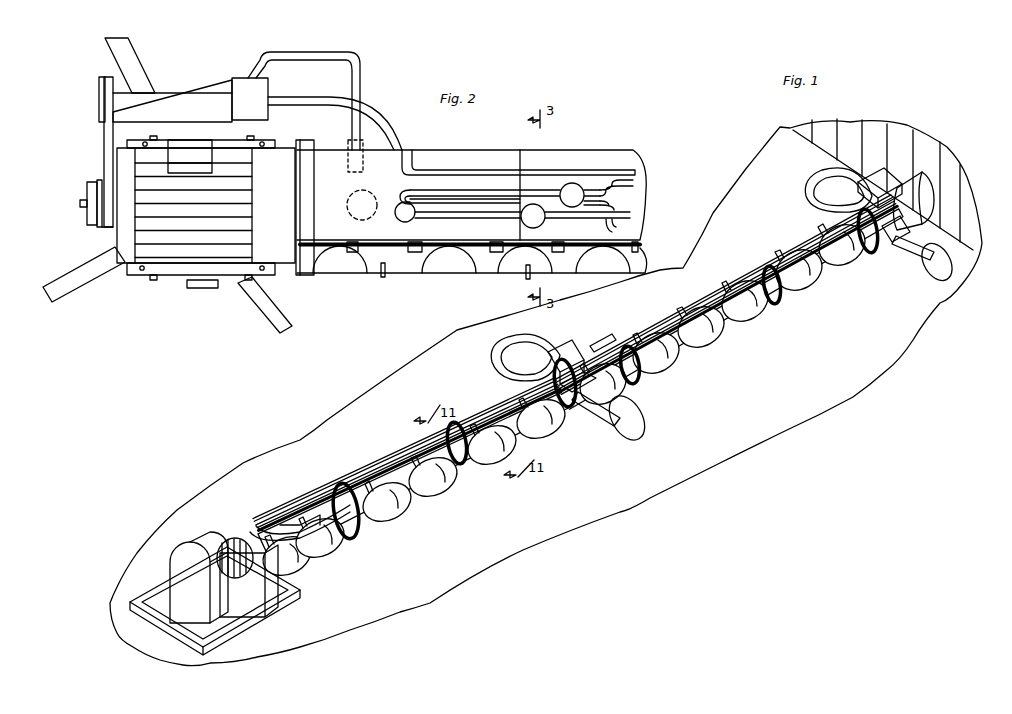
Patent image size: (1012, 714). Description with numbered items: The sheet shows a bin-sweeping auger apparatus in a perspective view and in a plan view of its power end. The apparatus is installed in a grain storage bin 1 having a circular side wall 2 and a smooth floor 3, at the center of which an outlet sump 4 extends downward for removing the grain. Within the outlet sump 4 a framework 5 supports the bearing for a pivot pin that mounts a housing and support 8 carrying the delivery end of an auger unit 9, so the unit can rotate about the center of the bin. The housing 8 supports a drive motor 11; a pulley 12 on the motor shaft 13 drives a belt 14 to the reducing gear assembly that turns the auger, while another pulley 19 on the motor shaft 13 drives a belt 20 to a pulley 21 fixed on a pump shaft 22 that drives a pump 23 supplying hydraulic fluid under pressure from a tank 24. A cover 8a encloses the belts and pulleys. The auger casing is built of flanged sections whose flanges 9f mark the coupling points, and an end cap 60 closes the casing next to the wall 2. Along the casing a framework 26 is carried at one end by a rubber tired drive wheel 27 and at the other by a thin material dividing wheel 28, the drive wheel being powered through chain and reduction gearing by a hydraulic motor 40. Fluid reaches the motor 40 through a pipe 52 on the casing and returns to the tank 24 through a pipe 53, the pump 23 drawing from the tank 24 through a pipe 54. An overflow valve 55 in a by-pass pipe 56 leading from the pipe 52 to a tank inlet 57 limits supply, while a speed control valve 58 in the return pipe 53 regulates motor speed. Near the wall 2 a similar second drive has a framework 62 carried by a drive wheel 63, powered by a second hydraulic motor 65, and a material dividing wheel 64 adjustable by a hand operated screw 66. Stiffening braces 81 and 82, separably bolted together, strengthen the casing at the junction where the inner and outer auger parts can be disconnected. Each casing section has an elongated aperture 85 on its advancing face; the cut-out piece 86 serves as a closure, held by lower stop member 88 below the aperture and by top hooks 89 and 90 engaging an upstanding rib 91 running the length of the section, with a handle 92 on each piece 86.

In FIG. 1, the grain storage bin 1 is at (789, 113).
In FIG. 1, the circular side wall 2 is at (852, 126).
In FIG. 1, the floor 3 is at (775, 155).
In FIG. 1, the outlet sump 4 is at (276, 600).
In FIG. 2, the framework 5 is at (90, 280).
In FIG. 1, the framework 5 is at (172, 618).
In FIG. 2, the housing and support 8 is at (301, 282).
In FIG. 1, the housing and support 8 is at (197, 524).
In FIG. 1, the cover 8a is at (199, 577).
In FIG. 2, the auger unit 9 is at (399, 289).
In FIG. 1, the auger unit 9 is at (350, 474).
In FIG. 1, the flanges 9f is at (356, 528).
In FIG. 2, the drive motor 11 is at (275, 215).
In FIG. 1, the drive motor 11 is at (227, 526).
In FIG. 2, the pulley 12 is at (86, 186).
In FIG. 2, the motor shaft 13 is at (80, 202).
In FIG. 2, the belt 14 is at (96, 223).
In FIG. 2, the pulley 19 is at (110, 226).
In FIG. 2, the belt 20 is at (104, 143).
In FIG. 2, the pulley 21 is at (99, 100).
In FIG. 2, the pump shaft 22 is at (148, 98).
In FIG. 2, the pump 23 is at (237, 80).
In FIG. 2, the tank 24 is at (346, 185).
In FIG. 1, the tank 24 is at (292, 507).
In FIG. 1, the framework 26 is at (584, 424).
In FIG. 1, the drive wheel 27 is at (494, 348).
In FIG. 1, the material dividing wheel 28 is at (636, 430).
In FIG. 1, the hydraulic motor 40 is at (598, 375).
In FIG. 2, the pipe 52 is at (480, 172).
In FIG. 1, the pipe 52 is at (474, 428).
In FIG. 2, the pipe 53 is at (610, 230).
In FIG. 1, the pipe 53 is at (504, 420).
In FIG. 2, the pipe 54 is at (366, 85).
In FIG. 2, the overflow valve 55 is at (596, 206).
In FIG. 2, the by-pass pipe 56 is at (613, 188).
In FIG. 2, the inlet 57 is at (396, 215).
In FIG. 2, the speed control valve 58 is at (543, 223).
In FIG. 1, the end cap 60 is at (926, 190).
In FIG. 1, the framework 62 is at (895, 229).
In FIG. 1, the drive wheel 63 is at (806, 177).
In FIG. 1, the material dividing wheel 64 is at (944, 255).
In FIG. 1, the hydraulic motor 65 is at (885, 188).
In FIG. 1, the hand operated screw 66 is at (920, 232).
In FIG. 1, the stiffening brace 81 is at (604, 343).
In FIG. 1, the stiffening brace 82 is at (572, 363).
In FIG. 1, the elongated aperture 85 is at (416, 482).
In FIG. 2, the piece 86 is at (410, 266).
In FIG. 1, the piece 86 is at (288, 556).
In FIG. 1, the lower stop member 88 is at (558, 437).
In FIG. 2, the top hook 89 is at (350, 251).
In FIG. 1, the top hook 89 is at (648, 361).
In FIG. 2, the top hook 90 is at (415, 250).
In FIG. 1, the top hook 90 is at (556, 414).
In FIG. 2, the upstanding rib 91 is at (458, 250).
In FIG. 2, the handle 92 is at (382, 279).
In FIG. 1, the handle 92 is at (434, 497).